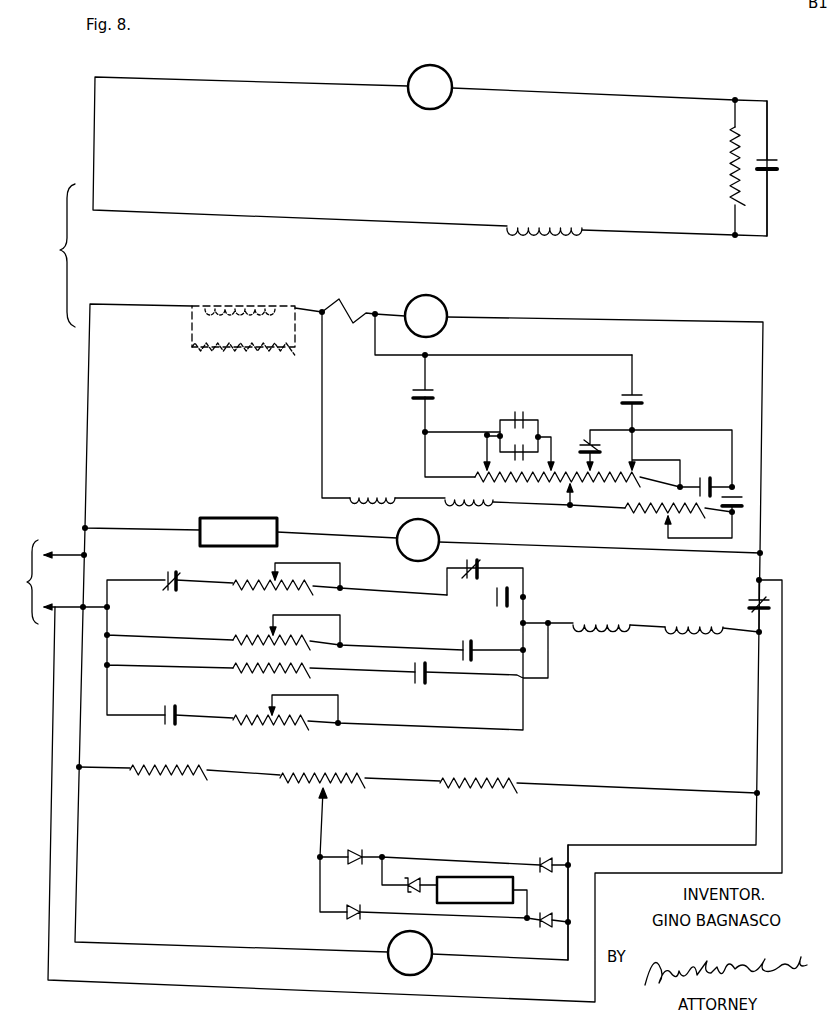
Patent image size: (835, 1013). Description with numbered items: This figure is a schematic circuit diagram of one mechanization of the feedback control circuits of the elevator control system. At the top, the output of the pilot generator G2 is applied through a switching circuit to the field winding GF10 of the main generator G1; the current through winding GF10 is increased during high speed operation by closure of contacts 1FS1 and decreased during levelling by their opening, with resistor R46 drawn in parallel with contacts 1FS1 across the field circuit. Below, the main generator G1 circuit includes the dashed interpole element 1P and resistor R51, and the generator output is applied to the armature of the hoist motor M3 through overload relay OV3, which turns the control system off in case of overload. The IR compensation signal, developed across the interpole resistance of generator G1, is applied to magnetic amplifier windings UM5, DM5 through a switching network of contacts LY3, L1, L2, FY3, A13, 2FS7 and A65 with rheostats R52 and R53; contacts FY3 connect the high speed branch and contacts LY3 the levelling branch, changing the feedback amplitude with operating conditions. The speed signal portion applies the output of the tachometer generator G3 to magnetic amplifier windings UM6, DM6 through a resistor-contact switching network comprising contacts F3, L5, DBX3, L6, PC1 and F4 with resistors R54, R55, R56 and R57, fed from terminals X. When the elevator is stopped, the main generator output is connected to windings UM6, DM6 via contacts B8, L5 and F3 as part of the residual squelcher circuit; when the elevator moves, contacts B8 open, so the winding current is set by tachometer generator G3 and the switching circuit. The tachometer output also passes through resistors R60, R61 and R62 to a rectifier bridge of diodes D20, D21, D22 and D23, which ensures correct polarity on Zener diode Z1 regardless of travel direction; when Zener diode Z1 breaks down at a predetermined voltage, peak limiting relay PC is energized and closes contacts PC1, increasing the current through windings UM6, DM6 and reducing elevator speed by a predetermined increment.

The pilot generator G2 is at (430, 87).
The resistor R46 is at (730, 154).
The contacts 1FS1 is at (775, 160).
The field winding GF10 is at (545, 224).
The resistor R51 is at (265, 358).
The contact 1P is at (349, 313).
The main generator G1 is at (426, 316).
The contacts LY3 is at (425, 398).
The contact L1 is at (515, 407).
The contact L2 is at (510, 457).
The contacts FY3 is at (635, 405).
The contact A13 is at (597, 456).
The field switch contact 2FS7 is at (720, 473).
The contact A65 is at (720, 498).
The rheostat R52 is at (564, 482).
The rheostat R53 is at (658, 517).
The magnetic amplifier winding UM5 is at (385, 489).
The magnetic amplifier winding DM5 is at (470, 506).
The overload relay OV3 is at (238, 532).
The hoist motor M3 is at (418, 540).
The terminals X is at (46, 582).
The contacts F3 is at (182, 572).
The rheostat R54 is at (293, 595).
The contacts L5 is at (482, 563).
The contact DBX3 is at (510, 607).
The rheostat R55 is at (267, 636).
The contact L6 is at (474, 652).
The resistor R56 is at (271, 663).
The contacts PC1 is at (428, 682).
The contact F4 is at (180, 711).
The rheostat R57 is at (259, 709).
The magnetic amplifier winding UM6 is at (615, 606).
The magnetic amplifier winding DM6 is at (669, 624).
The contacts B8 is at (747, 607).
The resistor R60 is at (182, 779).
The rheostat R61 is at (310, 760).
The resistor R62 is at (492, 760).
The diode D20 is at (355, 850).
The diode D21 is at (360, 905).
The Zener diode Z1 is at (410, 885).
The peak limiting relay PC is at (475, 890).
The diode D22 is at (538, 858).
The diode D23 is at (546, 909).
The tachometer generator G3 is at (410, 953).